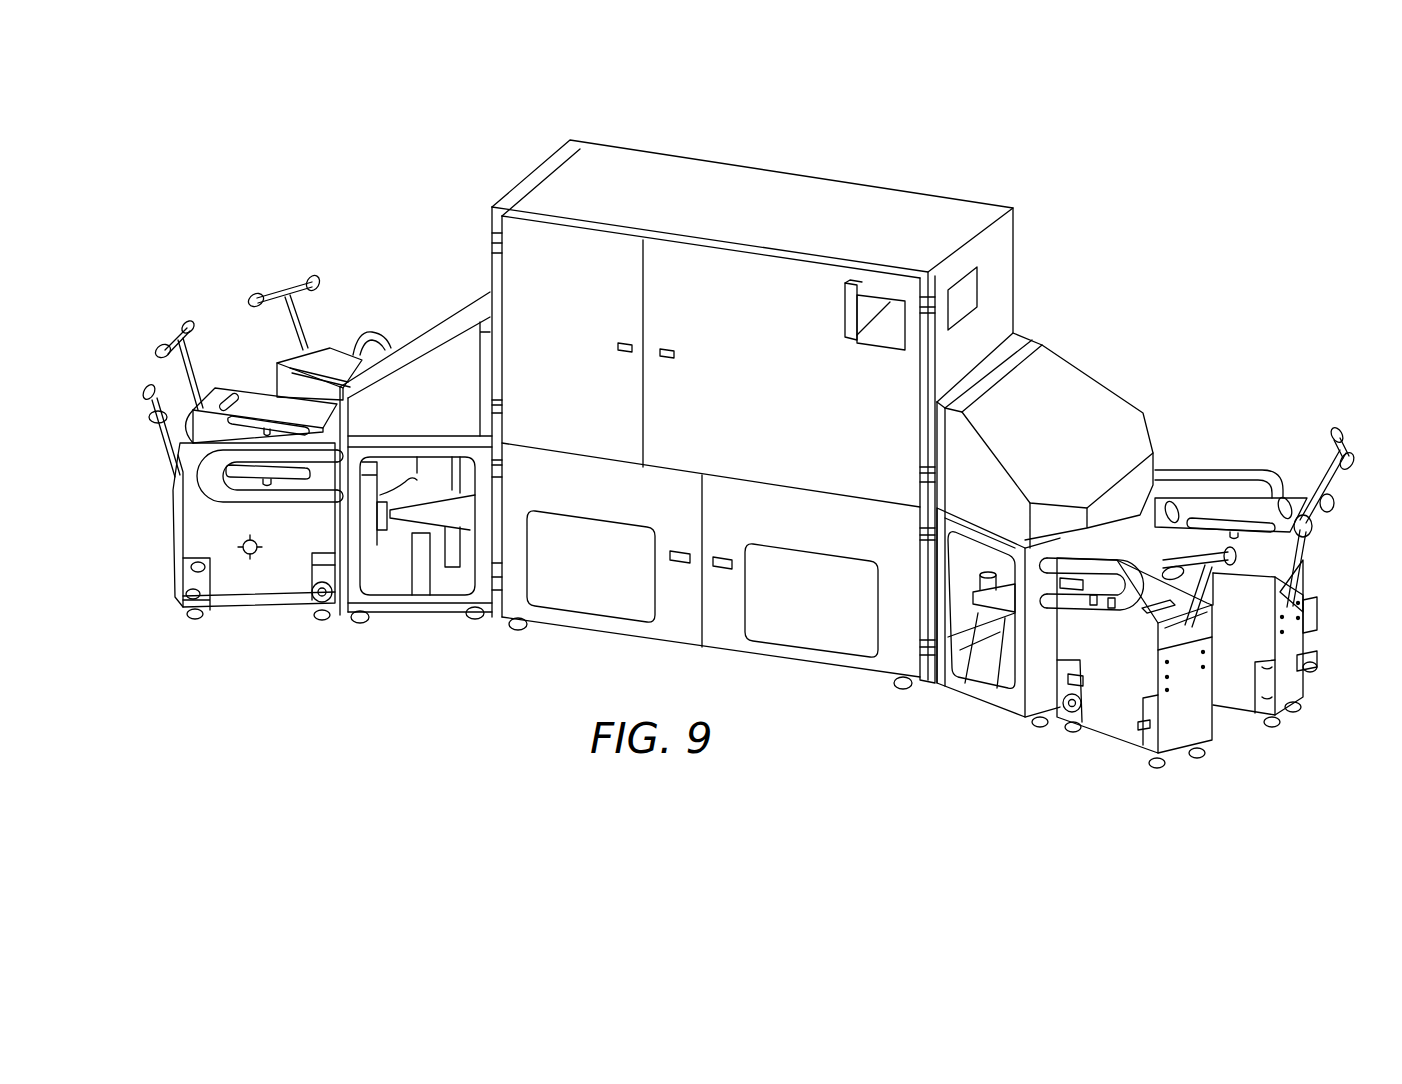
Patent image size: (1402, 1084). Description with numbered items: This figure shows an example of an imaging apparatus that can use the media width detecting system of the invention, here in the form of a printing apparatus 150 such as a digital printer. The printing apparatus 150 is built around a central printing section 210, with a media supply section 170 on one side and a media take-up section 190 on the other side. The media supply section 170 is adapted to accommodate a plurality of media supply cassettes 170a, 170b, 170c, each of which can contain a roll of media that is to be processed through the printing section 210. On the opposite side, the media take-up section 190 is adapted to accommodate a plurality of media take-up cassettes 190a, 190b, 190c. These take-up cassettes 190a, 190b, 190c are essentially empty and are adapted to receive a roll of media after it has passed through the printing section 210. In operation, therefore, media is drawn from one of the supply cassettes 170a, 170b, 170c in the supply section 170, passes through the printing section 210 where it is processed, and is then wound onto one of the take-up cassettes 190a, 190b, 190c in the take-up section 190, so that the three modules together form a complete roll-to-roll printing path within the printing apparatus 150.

The printing apparatus 150 is at (912, 160).
The printing section 210 is at (764, 185).
The media supply section 170 is at (443, 312).
The media supply cassette 170a is at (198, 523).
The media supply cassette 170b is at (256, 410).
The media supply cassette 170c is at (330, 355).
The media take-up section 190 is at (1097, 390).
The media take-up cassette 190a is at (1193, 732).
The media take-up cassette 190b is at (1290, 683).
The media take-up cassette 190c is at (1223, 508).